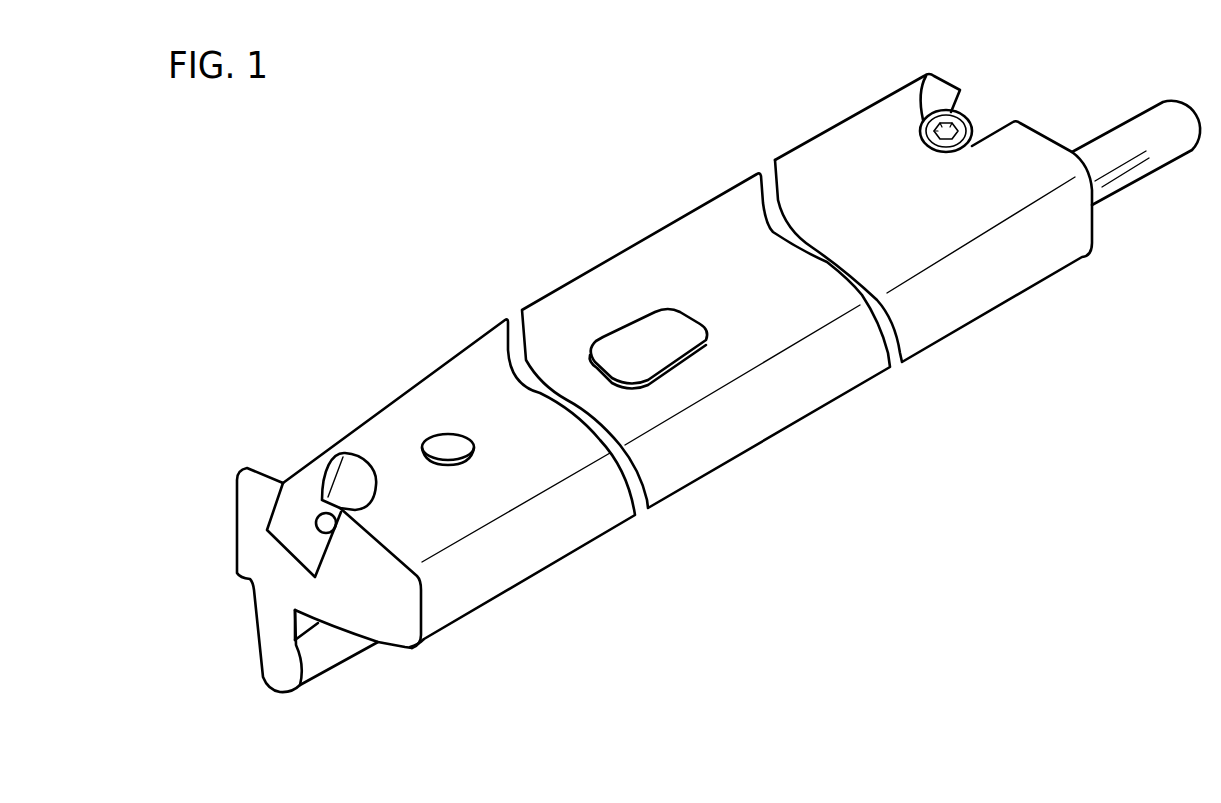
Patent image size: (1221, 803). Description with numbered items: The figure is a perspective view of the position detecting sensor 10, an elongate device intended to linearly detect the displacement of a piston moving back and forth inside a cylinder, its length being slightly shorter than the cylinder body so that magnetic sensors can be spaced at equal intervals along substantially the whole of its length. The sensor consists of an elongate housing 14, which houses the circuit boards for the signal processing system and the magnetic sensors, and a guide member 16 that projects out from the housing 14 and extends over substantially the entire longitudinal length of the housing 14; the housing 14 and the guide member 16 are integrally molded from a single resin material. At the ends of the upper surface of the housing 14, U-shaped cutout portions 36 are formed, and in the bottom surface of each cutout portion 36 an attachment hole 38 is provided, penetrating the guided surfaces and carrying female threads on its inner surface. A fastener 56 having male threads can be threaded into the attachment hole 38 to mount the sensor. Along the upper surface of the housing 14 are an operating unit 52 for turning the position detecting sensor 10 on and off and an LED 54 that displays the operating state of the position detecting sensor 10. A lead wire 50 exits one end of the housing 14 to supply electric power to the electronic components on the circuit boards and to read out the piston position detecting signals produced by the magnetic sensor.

The position detecting sensor 10 is at (722, 398).
The housing 14 is at (527, 530).
The guide member 16 is at (330, 650).
The cutout portion 36 is at (300, 495).
The attachment hole 38 is at (336, 519).
The lead wire 50 is at (1143, 180).
The operating unit 52 is at (667, 322).
The LED 54 is at (447, 443).
The fastener 56 is at (958, 108).